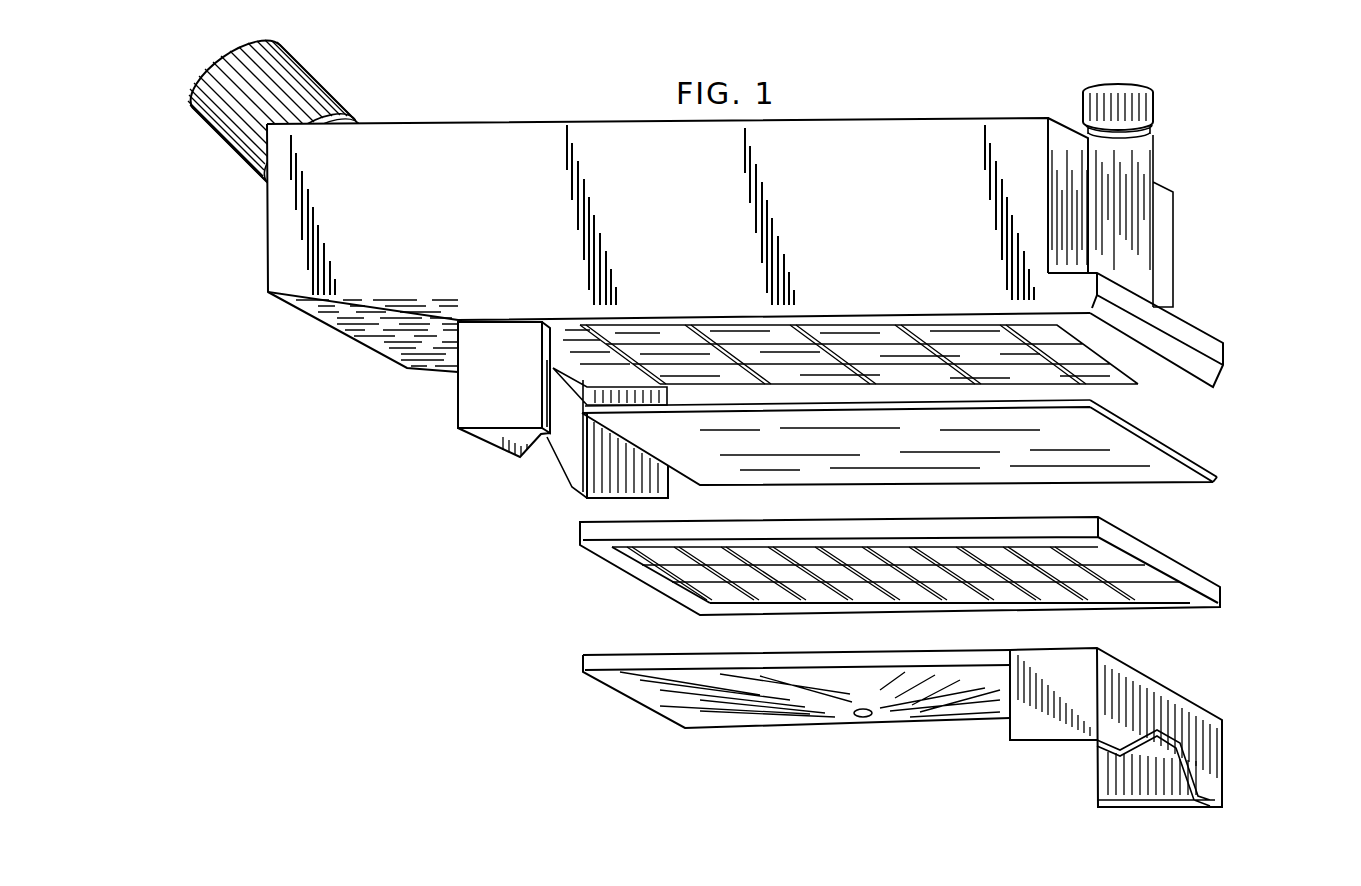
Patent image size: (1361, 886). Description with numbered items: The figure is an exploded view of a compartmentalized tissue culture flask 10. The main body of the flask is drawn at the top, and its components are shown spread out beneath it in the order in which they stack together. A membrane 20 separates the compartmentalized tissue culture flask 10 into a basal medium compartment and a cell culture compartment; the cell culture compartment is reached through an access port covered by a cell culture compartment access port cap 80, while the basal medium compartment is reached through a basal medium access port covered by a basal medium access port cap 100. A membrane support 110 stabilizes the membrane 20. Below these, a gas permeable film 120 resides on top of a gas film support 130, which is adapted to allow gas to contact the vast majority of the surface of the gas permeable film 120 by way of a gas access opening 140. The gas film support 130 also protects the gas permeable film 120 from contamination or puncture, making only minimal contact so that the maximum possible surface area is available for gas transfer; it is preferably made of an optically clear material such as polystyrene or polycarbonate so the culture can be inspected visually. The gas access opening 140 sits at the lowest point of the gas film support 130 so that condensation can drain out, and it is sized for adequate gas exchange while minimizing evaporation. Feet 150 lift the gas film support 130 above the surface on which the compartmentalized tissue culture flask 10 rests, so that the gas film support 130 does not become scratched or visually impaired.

The compartmentalized tissue culture flask 10 is at (258, 262).
The membrane 20 is at (1090, 353).
The cell culture compartment access port cap 80 is at (1155, 100).
The basal medium access port cap 100 is at (193, 107).
The membrane support 110 is at (1057, 363).
The gas permeable film 120 is at (1217, 467).
The gas film support 130 is at (580, 540).
The gas access opening 140 is at (863, 720).
The feet 150 is at (455, 425).